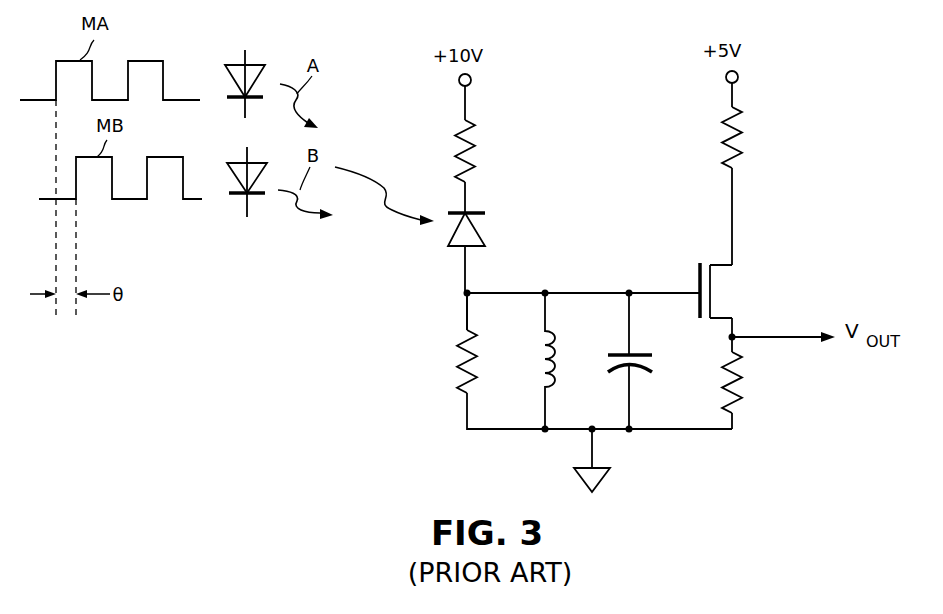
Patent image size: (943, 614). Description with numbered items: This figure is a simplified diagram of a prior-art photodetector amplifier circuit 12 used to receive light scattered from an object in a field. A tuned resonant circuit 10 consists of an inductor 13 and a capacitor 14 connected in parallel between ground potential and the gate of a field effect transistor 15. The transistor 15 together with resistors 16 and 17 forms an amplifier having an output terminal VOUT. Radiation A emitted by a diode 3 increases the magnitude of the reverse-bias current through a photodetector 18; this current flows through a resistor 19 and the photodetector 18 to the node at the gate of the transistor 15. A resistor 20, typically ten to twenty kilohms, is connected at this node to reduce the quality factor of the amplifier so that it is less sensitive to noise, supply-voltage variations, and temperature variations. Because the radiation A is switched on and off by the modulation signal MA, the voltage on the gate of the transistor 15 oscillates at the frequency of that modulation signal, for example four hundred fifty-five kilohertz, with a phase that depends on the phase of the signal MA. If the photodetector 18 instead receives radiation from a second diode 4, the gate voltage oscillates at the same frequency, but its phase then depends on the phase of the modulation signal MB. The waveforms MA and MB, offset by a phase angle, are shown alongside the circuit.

The diode 3 is at (264, 58).
The diode 4 is at (260, 160).
The tuned resonant circuit 10 is at (622, 331).
The photodetector amplifier circuit 12 is at (410, 314).
The inductor 13 is at (549, 340).
The capacitor 14 is at (655, 351).
The field effect transistor 15 is at (712, 299).
The resistor 16 is at (738, 126).
The resistor 17 is at (740, 384).
The photodetector 18 is at (477, 229).
The resistor 19 is at (472, 139).
The resistor 20 is at (456, 365).